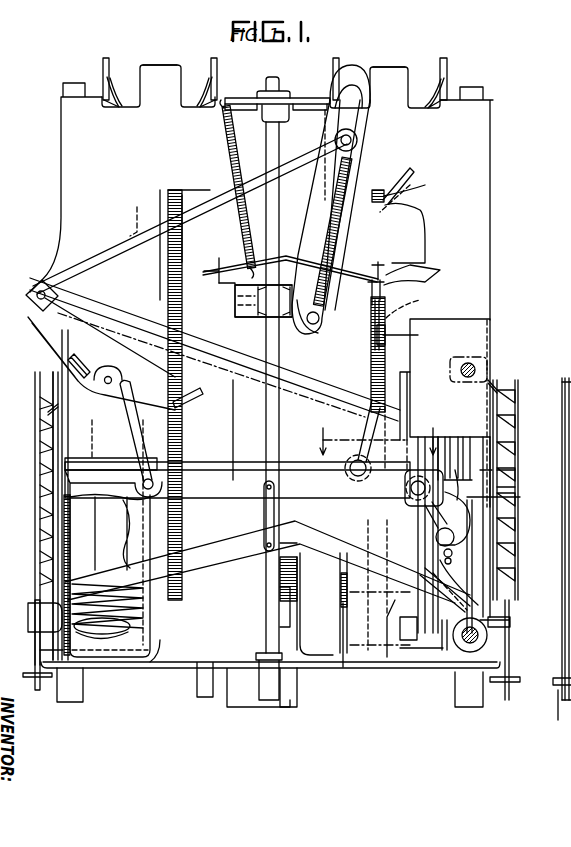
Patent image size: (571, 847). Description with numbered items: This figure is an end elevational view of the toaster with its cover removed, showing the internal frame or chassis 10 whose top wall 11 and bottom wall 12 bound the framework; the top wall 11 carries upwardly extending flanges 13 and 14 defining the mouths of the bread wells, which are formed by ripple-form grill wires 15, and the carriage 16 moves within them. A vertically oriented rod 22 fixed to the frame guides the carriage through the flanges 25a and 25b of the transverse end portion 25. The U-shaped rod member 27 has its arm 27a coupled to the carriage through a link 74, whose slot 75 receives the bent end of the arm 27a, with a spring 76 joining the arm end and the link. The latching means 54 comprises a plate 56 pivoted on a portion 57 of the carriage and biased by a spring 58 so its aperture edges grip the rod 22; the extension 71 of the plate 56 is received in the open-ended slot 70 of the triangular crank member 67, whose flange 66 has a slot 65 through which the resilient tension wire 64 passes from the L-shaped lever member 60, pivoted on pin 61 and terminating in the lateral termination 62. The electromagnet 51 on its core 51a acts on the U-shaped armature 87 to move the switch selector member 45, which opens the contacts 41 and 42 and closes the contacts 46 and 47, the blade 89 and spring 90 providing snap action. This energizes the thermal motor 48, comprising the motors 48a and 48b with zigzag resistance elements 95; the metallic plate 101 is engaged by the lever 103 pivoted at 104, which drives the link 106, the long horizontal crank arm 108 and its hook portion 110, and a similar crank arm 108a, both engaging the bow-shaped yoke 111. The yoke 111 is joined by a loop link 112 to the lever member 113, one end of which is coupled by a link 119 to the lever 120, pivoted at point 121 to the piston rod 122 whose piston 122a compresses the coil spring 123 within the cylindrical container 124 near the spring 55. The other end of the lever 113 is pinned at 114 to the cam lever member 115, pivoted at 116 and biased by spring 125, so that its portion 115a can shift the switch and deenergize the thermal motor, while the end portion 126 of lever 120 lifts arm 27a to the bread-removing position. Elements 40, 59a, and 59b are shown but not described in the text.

The internal frame or chassis 10 is at (53, 139).
The top wall 11 is at (300, 96).
The bottom wall 12 is at (427, 670).
The upwardly extending flange 13 is at (104, 65).
The upwardly extending flange 14 is at (160, 64).
The grill wires 15 is at (113, 92).
The carriage 16 is at (283, 224).
The vertically oriented rod 22 is at (283, 208).
The transverse end portion 25 is at (352, 208).
The flange 25a is at (240, 96).
The flange 25b is at (240, 318).
The U-shaped rod member 27 is at (42, 283).
The arm 27a is at (208, 208).
The pawl 40 is at (503, 471).
The contact 41 is at (450, 440).
The fixed contact 42 is at (455, 508).
The switch selector member 45 is at (502, 487).
The fixed contact 46 is at (486, 434).
The contact 47 is at (460, 440).
The thermal motor 48 is at (34, 378).
The thermal motor 48a is at (500, 384).
The thermal motor 48b is at (36, 402).
The electromagnet 51 is at (400, 655).
The supporting core 51a is at (415, 618).
The latching means 54 is at (282, 252).
The spring 55 is at (122, 650).
The plate 56 is at (222, 266).
The portion 57 is at (240, 300).
The spring 58 is at (238, 165).
The nut 59a is at (290, 115).
The nut 59b is at (263, 320).
The L-shaped lever member 60 is at (402, 183).
The pivot pin 61 is at (412, 267).
The laterally extending termination 62 is at (406, 168).
The resilient tension wire 64 is at (408, 333).
The slot 65 is at (374, 326).
The flange 66 is at (414, 305).
The triangular crank member 67 is at (368, 340).
The open-ended slot 70 is at (372, 288).
The extension 71 is at (374, 272).
The link 74 is at (320, 336).
The slot 75 is at (357, 116).
The spring 76 is at (332, 244).
The U-shaped armature 87 is at (466, 556).
The blade 89 is at (503, 488).
The spring 90 is at (436, 535).
The resistance element 95 is at (36, 434).
The metallic plate 101 is at (562, 423).
The lever 103 is at (561, 705).
The pivot 104 is at (553, 545).
The link 106 is at (508, 676).
The long horizontal crank arm 108 is at (512, 648).
The crank arm 108a is at (30, 662).
The hook portion 110 is at (513, 612).
The yoke 111 is at (308, 530).
The loop link 112 is at (262, 505).
The lever member 113 is at (212, 468).
The pin 114 is at (406, 505).
The cam lever member 115 is at (420, 432).
The portion 115a is at (490, 528).
The pivot 116 is at (348, 474).
The link 119 is at (150, 405).
The lever 120 is at (138, 377).
The point 121 is at (108, 364).
The piston rod 122 is at (100, 432).
The piston 122a is at (93, 565).
The coil spring 123 is at (100, 630).
The cylindrical container 124 is at (155, 665).
The spring 125 is at (370, 420).
The end portion 126 is at (195, 395).